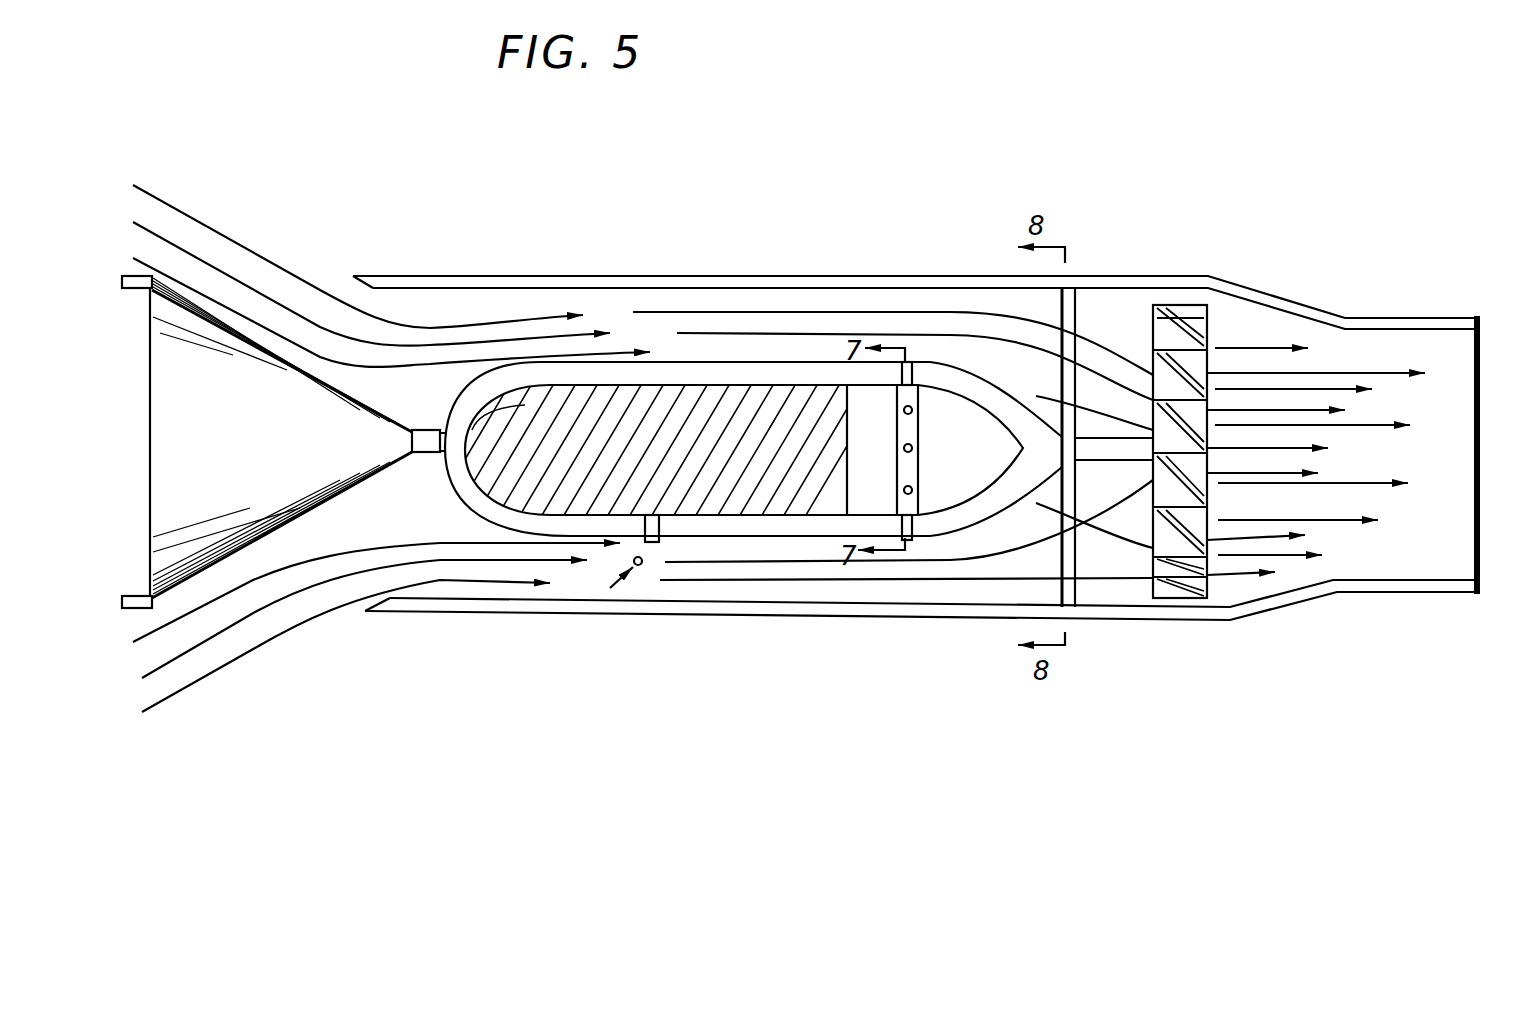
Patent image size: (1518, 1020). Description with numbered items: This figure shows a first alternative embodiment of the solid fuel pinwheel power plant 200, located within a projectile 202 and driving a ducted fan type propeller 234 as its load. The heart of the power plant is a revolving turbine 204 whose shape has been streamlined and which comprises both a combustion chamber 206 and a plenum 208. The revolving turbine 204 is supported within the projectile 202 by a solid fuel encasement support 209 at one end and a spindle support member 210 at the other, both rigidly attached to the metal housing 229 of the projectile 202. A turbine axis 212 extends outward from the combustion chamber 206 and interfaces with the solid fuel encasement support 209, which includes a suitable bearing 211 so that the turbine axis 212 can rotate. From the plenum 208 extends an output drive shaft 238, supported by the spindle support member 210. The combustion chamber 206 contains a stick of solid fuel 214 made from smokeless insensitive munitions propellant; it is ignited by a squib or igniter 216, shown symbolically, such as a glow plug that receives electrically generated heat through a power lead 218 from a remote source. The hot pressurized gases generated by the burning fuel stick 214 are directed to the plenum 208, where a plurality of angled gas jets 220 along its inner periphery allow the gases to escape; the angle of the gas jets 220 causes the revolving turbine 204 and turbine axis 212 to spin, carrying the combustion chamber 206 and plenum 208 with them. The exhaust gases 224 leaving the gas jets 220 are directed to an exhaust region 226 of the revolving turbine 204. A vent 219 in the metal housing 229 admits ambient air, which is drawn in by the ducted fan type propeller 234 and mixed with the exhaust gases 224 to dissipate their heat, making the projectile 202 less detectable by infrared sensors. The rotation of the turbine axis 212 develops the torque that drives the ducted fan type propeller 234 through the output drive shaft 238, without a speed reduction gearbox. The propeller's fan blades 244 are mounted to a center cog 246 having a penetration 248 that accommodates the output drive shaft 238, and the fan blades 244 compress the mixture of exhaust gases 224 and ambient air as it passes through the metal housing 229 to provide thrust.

The solid fuel pinwheel power plant 200 is at (497, 217).
The projectile 202 is at (125, 272).
The revolving turbine 204 is at (677, 357).
The combustion chamber 206 is at (517, 387).
The plenum 208 is at (933, 534).
The solid fuel encasement support 209 is at (280, 478).
The spindle support member 210 is at (1077, 600).
The bearing 211 is at (422, 430).
The turbine axis 212 is at (428, 453).
The solid fuel stick 214 is at (517, 468).
The squib or igniter 216 is at (659, 542).
The power lead 218 is at (638, 565).
The vent 219 is at (337, 278).
The gas jets 220 is at (913, 410).
The exhaust gases 224 is at (975, 357).
The exhaust region 226 is at (1087, 367).
The metal housing 229 is at (475, 613).
The ducted fan type propeller 234 is at (1177, 600).
The output drive shaft 238 is at (1104, 448).
The fan blades 244 is at (1195, 345).
The center cog 246 is at (1145, 462).
The penetration 248 is at (1140, 437).